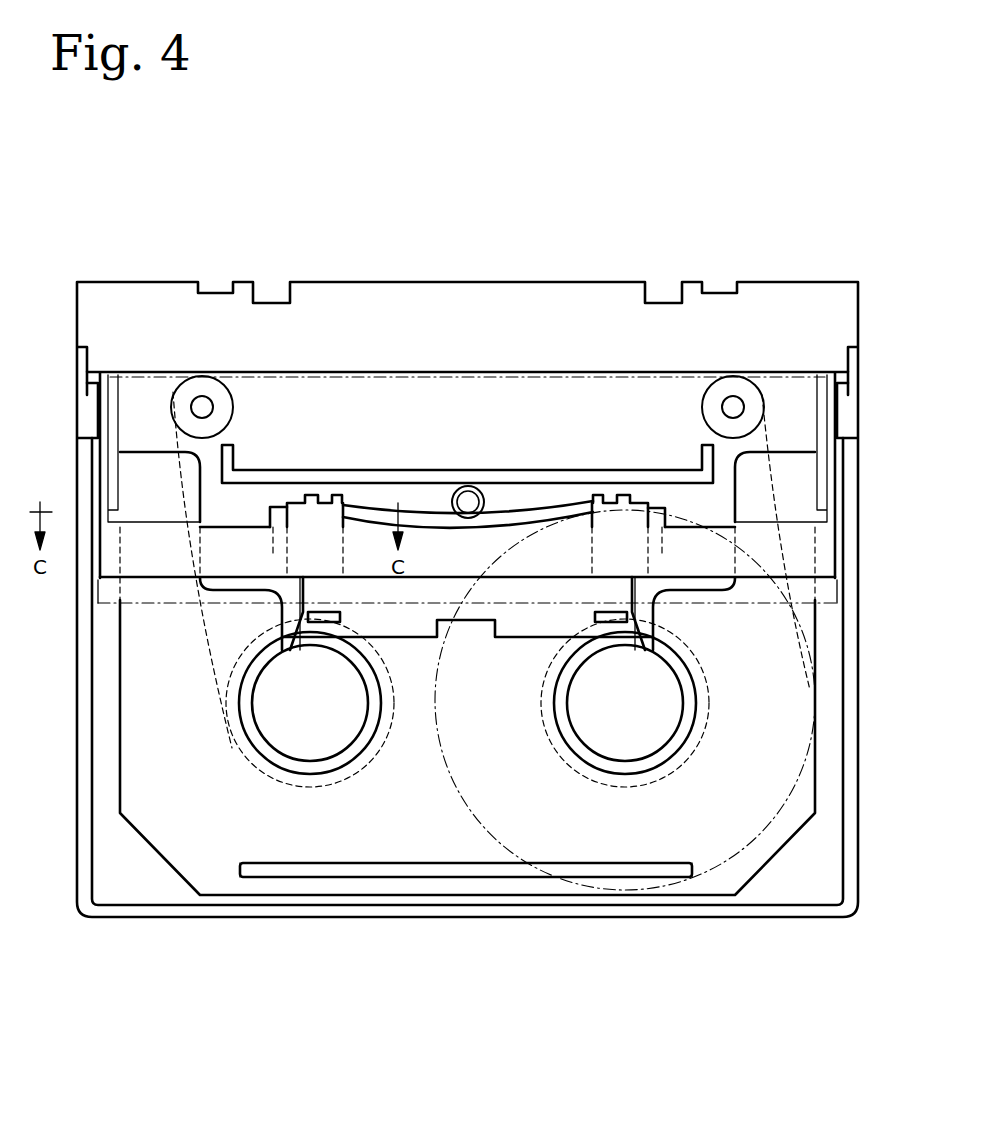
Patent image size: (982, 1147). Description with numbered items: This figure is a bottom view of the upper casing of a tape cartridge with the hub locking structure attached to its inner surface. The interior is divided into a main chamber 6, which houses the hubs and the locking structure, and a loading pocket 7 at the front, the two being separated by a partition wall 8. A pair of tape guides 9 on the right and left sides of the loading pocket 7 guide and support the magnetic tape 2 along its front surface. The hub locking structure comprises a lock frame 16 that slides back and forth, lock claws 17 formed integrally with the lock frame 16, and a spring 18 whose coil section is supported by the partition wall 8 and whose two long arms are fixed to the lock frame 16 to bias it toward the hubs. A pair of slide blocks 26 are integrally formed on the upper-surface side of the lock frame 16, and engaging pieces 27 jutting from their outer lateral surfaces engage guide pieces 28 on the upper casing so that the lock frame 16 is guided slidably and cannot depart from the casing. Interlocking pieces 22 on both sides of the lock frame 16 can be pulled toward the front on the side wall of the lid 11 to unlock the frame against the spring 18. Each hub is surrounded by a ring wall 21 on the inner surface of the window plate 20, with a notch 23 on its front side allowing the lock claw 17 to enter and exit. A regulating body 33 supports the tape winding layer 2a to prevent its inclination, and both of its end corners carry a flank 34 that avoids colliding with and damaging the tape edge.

The lid 11 is at (463, 308).
The magnetic tape 2 is at (425, 371).
The interlocking piece 22 is at (87, 388).
The tape guide 9 is at (217, 398).
The partition wall 8 is at (424, 470).
The loading pocket 7 is at (464, 411).
The slide block 26 is at (360, 500).
The guide piece 28 is at (275, 510).
The spring 18 is at (516, 500).
The engaging piece 27 is at (268, 562).
The lock frame 16 is at (468, 567).
The lock claw 17 is at (282, 610).
The notch 23 is at (302, 645).
The ring wall 21 is at (250, 735).
The tape winding layer 2a is at (497, 783).
The main chamber 6 is at (329, 822).
The window plate 20 is at (760, 868).
The regulating body 33 is at (418, 877).
The flank 34 is at (248, 865).